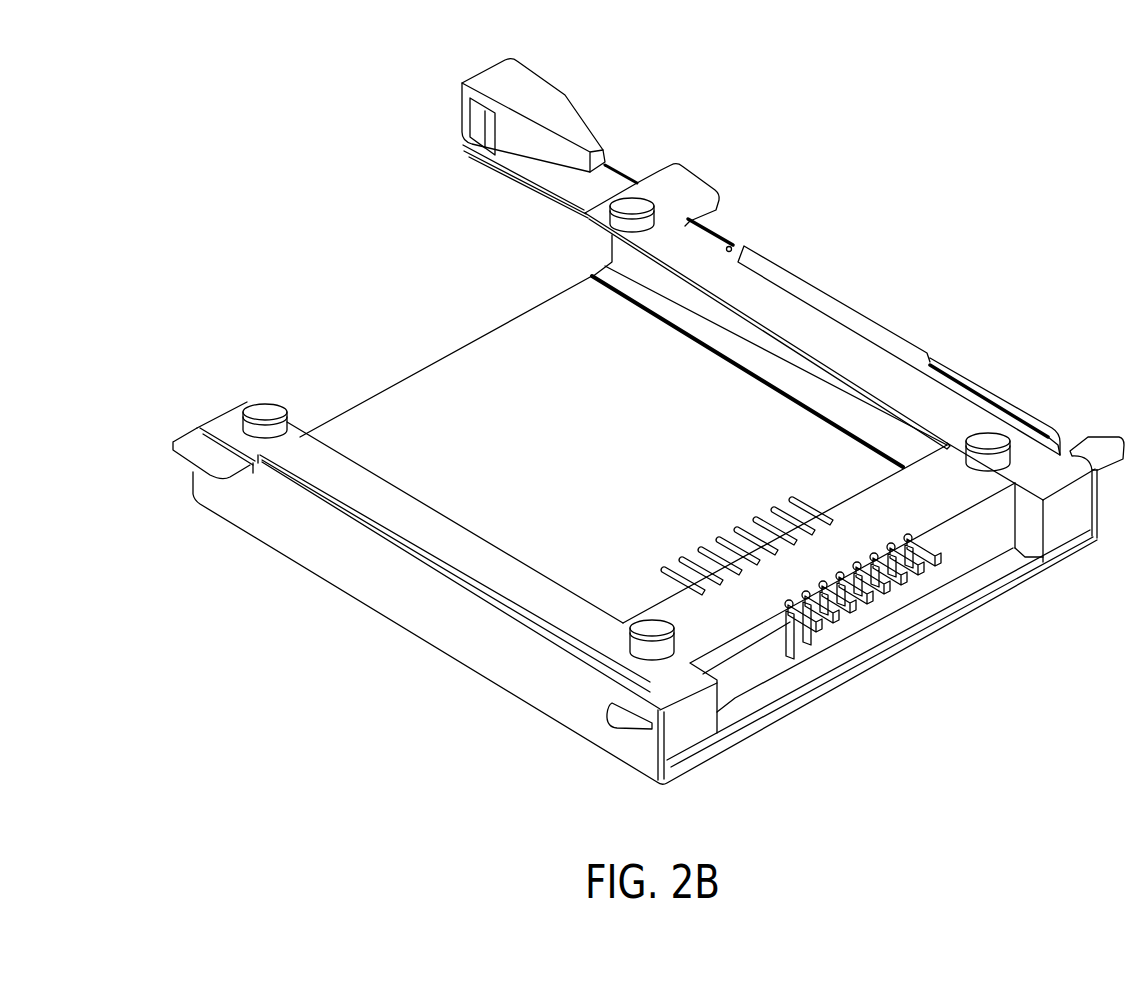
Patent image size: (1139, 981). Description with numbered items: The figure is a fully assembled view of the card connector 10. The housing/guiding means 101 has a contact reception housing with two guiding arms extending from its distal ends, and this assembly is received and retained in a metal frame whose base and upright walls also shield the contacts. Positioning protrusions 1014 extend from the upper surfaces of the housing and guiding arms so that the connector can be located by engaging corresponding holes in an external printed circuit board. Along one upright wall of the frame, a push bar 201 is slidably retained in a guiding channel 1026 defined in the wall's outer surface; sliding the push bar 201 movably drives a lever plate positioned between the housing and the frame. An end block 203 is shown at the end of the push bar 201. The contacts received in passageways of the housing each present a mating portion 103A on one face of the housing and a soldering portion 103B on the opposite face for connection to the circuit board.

The card connector 10 is at (466, 673).
The housing/guiding means 101 is at (443, 537).
The positioning protrusions 1014 is at (267, 412).
The guiding channel 1026 is at (735, 247).
The push bar 201 is at (720, 232).
The ejector block 203 is at (538, 100).
The mating portion 103A is at (747, 518).
The soldering portion 103B is at (813, 637).